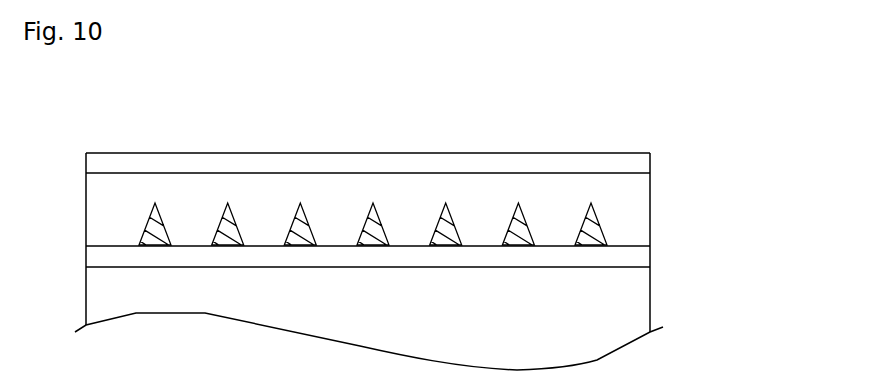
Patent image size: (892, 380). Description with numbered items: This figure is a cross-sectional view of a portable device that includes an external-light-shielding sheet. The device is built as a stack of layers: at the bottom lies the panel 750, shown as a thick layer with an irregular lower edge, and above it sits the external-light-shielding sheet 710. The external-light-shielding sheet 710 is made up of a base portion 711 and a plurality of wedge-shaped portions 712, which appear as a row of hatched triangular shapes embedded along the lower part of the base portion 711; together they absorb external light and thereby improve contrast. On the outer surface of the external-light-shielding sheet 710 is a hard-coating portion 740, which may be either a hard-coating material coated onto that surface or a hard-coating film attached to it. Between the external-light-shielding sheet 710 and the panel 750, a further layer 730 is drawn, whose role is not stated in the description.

The external-light-shielding sheet 710 is at (458, 209).
The base portion 711 is at (620, 193).
The wedge-shaped portions 712 is at (592, 226).
The intermediate layer 730 is at (623, 257).
The hard-coating portion 740 is at (620, 162).
The panel 750 is at (631, 303).